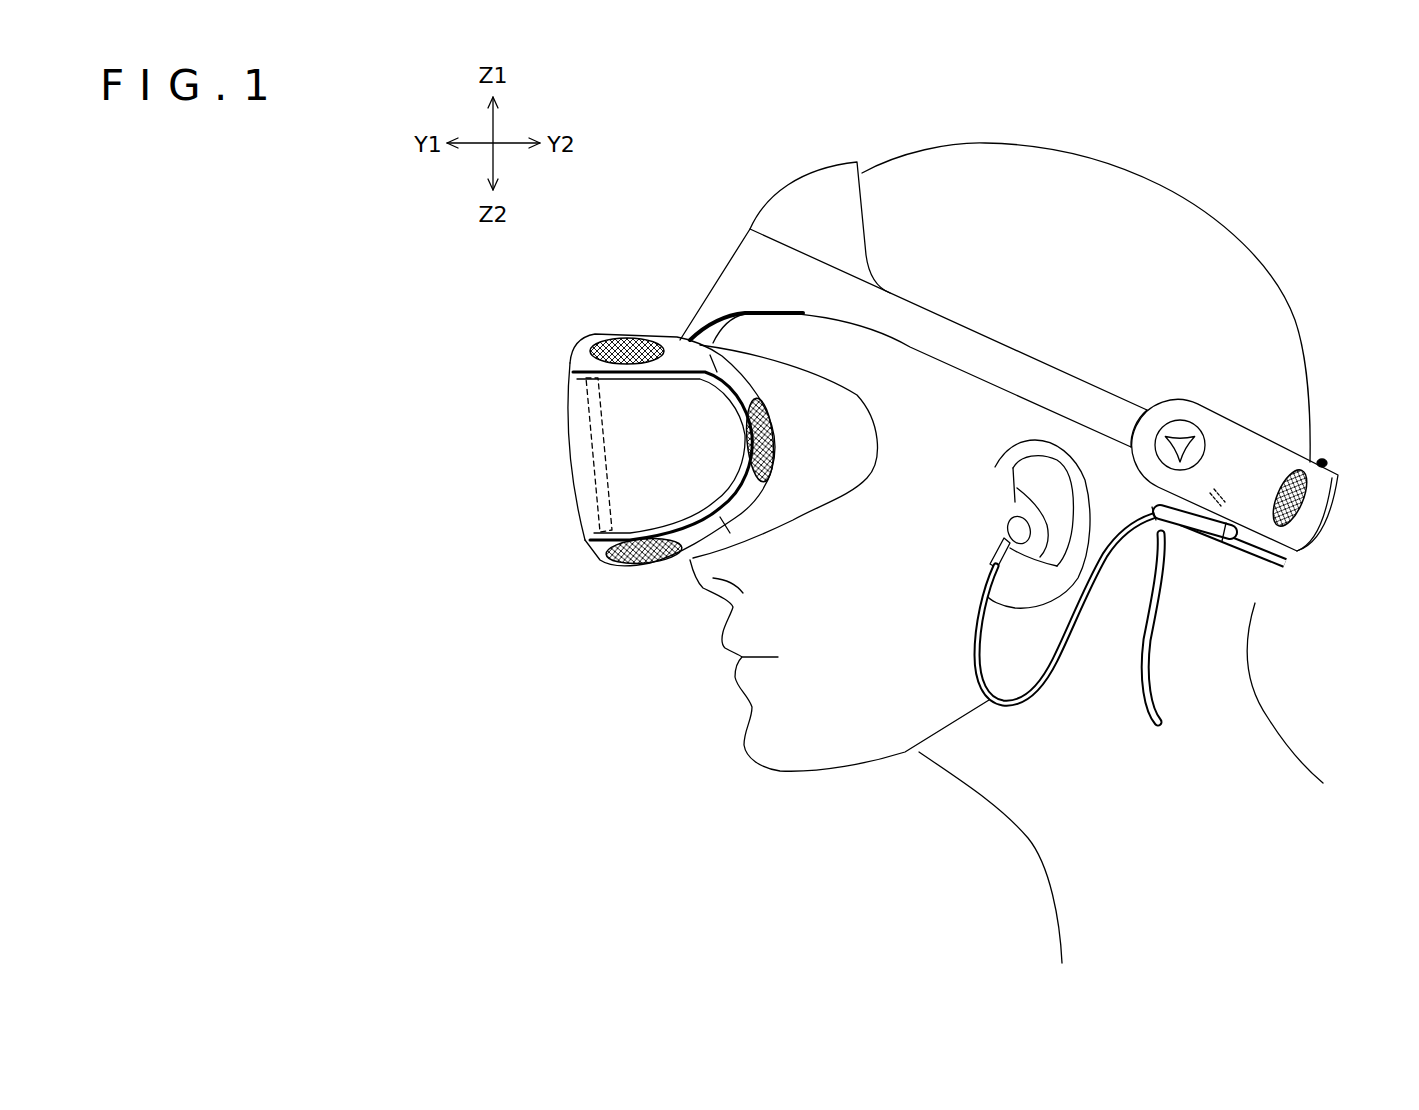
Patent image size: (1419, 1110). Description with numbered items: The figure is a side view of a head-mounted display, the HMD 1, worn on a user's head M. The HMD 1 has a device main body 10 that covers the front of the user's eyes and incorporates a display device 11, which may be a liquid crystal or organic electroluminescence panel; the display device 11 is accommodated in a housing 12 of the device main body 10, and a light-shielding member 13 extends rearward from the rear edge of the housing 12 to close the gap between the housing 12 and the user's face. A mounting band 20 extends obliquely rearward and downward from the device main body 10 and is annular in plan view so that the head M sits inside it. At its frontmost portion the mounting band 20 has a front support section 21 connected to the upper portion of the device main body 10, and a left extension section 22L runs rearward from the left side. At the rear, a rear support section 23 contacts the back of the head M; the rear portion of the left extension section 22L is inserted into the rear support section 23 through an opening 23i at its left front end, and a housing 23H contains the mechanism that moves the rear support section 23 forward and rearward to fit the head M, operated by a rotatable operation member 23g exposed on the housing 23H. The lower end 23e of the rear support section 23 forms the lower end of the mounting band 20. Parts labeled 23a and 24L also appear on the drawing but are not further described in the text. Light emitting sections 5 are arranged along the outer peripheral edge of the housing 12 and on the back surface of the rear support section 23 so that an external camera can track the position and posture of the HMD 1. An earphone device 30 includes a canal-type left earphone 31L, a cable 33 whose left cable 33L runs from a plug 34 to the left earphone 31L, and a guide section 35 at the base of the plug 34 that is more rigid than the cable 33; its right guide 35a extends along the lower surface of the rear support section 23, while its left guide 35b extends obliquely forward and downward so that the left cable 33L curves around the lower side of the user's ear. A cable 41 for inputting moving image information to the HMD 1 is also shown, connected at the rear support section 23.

The HMD 1 is at (678, 240).
The light emitting sections 5 is at (628, 352).
The device main body 10 is at (545, 390).
The display device 11 is at (587, 413).
The housing 12 is at (568, 478).
The light-shielding member 13 is at (778, 510).
The mounting band 20 is at (1035, 356).
The front support section 21 is at (808, 203).
The left extension section 22L is at (950, 340).
The rear support section 23 is at (1259, 477).
The housing 23H is at (1272, 442).
The rear end surface 23a is at (1322, 518).
The lower end 23e is at (1290, 562).
The operation member 23g is at (1323, 462).
The opening 23i is at (1138, 416).
The left adjustment dial 24L is at (1182, 427).
The earphone device 30 is at (1257, 562).
The left earphone 31L is at (1007, 523).
The cable 33 is at (1053, 660).
The left cable 33L is at (1005, 700).
The plug 34 is at (1222, 495).
The guide section 35 is at (1171, 552).
The right guide 35a is at (1226, 545).
The left guide 35b is at (1150, 510).
The cable 41 is at (1162, 688).
The user's head M is at (1282, 290).